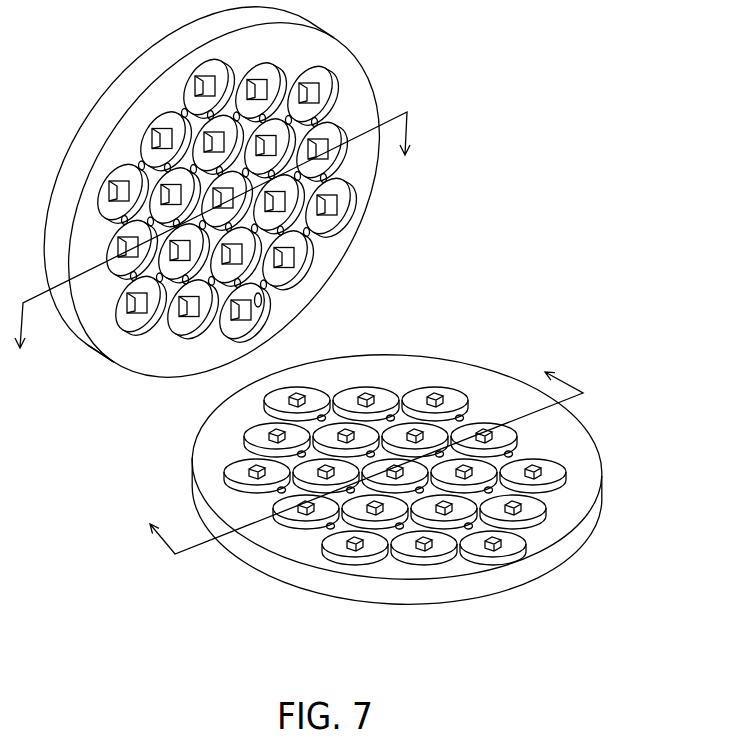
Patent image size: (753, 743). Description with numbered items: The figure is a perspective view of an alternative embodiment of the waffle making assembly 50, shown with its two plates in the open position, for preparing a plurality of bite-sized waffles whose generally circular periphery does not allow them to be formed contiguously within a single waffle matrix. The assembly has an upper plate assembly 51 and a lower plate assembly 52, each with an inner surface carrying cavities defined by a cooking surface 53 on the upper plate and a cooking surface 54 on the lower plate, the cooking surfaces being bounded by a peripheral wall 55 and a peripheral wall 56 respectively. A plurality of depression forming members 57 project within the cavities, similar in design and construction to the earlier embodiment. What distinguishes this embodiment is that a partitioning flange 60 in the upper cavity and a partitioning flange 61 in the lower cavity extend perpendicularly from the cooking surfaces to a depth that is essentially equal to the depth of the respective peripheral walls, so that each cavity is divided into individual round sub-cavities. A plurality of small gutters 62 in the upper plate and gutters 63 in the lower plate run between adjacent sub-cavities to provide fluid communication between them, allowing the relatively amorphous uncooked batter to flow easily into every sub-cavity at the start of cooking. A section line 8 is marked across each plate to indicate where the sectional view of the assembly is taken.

The section line 8 is at (558, 140).
The waffle making assembly 50 is at (317, 302).
The upper plate assembly 51 is at (73, 172).
The lower plate assembly 52 is at (307, 572).
The cooking surface 53 is at (320, 225).
The cooking surface 54 is at (445, 400).
The peripheral wall 55 is at (330, 82).
The peripheral wall 56 is at (343, 378).
The depression forming member 57 is at (98, 353).
The partitioning flange 60 is at (178, 106).
The partitioning flange 61 is at (578, 434).
The gutter 62 is at (261, 303).
The gutter 63 is at (247, 458).